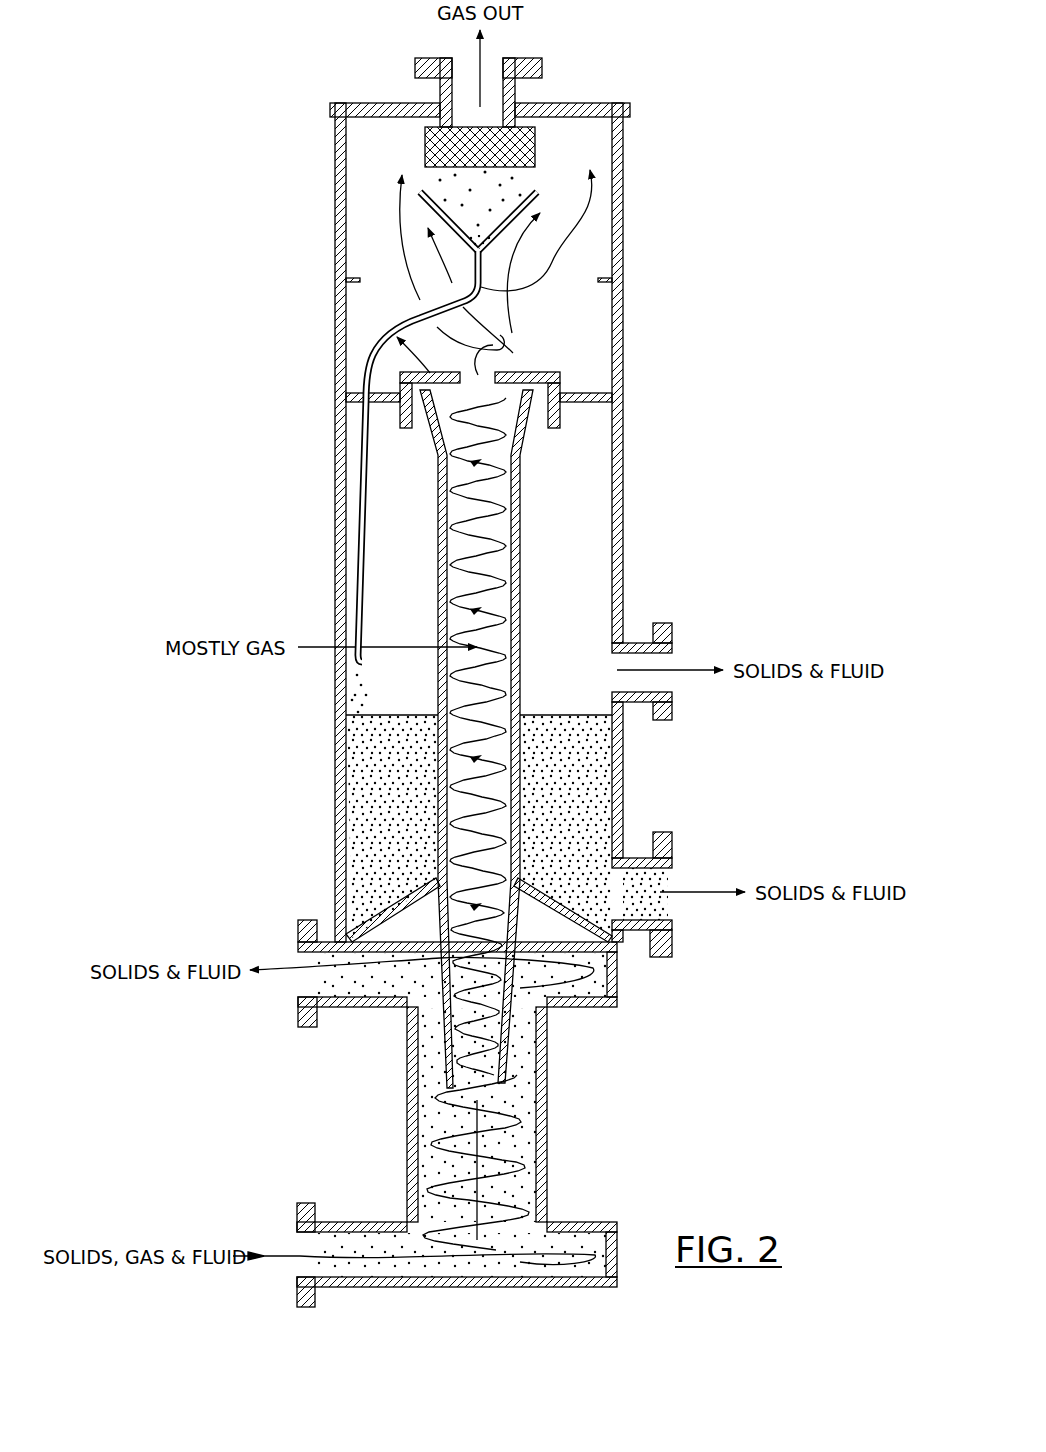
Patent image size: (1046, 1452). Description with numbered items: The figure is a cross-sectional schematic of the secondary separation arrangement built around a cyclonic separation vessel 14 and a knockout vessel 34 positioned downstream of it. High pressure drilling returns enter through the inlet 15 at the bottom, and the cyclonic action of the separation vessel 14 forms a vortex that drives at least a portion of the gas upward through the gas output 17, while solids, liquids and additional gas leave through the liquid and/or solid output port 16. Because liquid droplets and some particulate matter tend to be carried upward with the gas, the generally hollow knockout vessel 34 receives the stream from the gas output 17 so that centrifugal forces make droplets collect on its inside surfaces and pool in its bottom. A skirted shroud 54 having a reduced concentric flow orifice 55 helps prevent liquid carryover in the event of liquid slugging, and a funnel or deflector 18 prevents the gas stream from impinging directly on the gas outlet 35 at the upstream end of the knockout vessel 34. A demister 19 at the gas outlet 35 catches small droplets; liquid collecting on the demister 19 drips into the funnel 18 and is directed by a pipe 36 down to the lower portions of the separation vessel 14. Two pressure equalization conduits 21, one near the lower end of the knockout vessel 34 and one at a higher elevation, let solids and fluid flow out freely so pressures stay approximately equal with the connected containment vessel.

The separation vessel 14 is at (547, 1124).
The inlet 15 is at (297, 1215).
The liquid and/or solid output port 16 is at (302, 932).
The gas output 17 is at (527, 1010).
The funnel or deflector 18 is at (537, 195).
The demister 19 is at (520, 152).
The pressure equalization conduits 21 is at (663, 632).
The knockout vessel 34 is at (625, 363).
The gas outlet 35 is at (542, 68).
The pipe 36 is at (543, 283).
The skirted shroud 54 is at (562, 412).
The reduced concentric flow orifice 55 is at (496, 355).